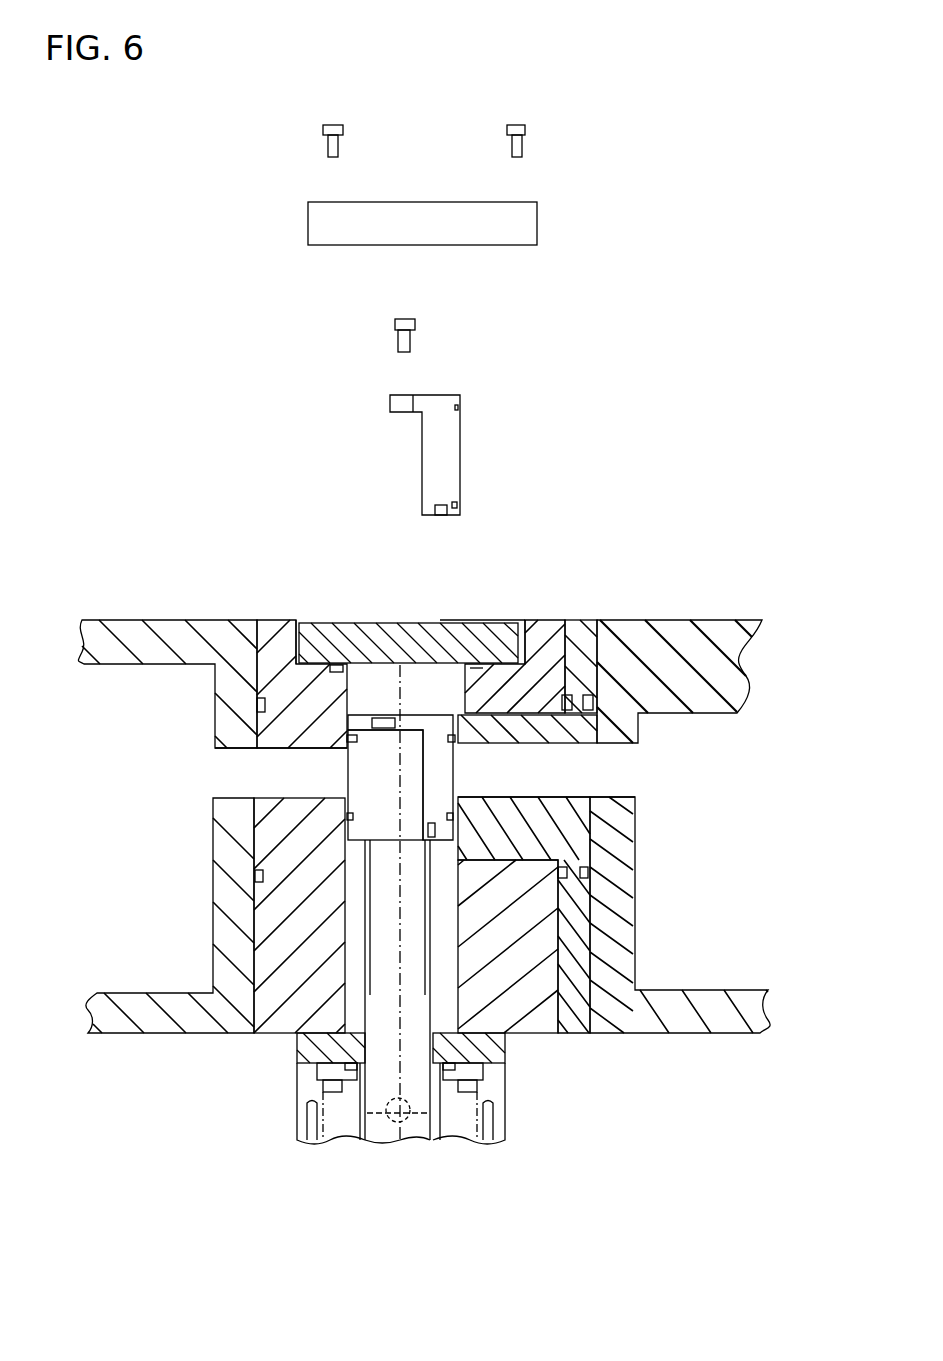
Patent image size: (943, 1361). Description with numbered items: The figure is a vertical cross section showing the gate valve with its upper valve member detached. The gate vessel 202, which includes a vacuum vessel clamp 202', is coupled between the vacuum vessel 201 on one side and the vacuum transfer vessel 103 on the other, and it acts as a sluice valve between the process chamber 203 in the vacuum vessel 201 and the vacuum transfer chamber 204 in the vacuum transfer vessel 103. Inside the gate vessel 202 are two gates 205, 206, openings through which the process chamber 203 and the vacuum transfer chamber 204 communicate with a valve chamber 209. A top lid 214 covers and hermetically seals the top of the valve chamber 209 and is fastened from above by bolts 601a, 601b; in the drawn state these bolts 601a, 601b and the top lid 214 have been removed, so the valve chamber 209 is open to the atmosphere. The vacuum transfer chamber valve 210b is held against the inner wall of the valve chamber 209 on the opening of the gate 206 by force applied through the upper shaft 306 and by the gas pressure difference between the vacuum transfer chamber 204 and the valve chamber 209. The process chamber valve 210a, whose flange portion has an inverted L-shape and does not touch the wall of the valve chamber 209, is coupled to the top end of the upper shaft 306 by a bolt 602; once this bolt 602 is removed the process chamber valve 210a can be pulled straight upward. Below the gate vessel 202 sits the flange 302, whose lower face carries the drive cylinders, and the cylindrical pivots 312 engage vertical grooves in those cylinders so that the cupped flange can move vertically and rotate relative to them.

The bolt 601b is at (335, 124).
The bolt 601a is at (518, 124).
The bolt 602 is at (403, 320).
The process chamber valve 210a is at (450, 447).
The vacuum transfer vessel 103 is at (153, 637).
The gate vessel 202 is at (422, 642).
The vacuum vessel clamp 202' is at (639, 624).
The valve chamber 209 is at (382, 683).
The top lid 214 is at (488, 622).
The vacuum vessel 201 is at (667, 630).
The gate 206 is at (230, 772).
The gate 205 is at (628, 773).
The vacuum transfer chamber valve 210b is at (360, 775).
The vacuum transfer chamber 204 is at (173, 912).
The process chamber 203 is at (685, 918).
The flange 302 is at (297, 1047).
The upper shaft 306 is at (420, 1048).
The pivot 312 is at (393, 1117).